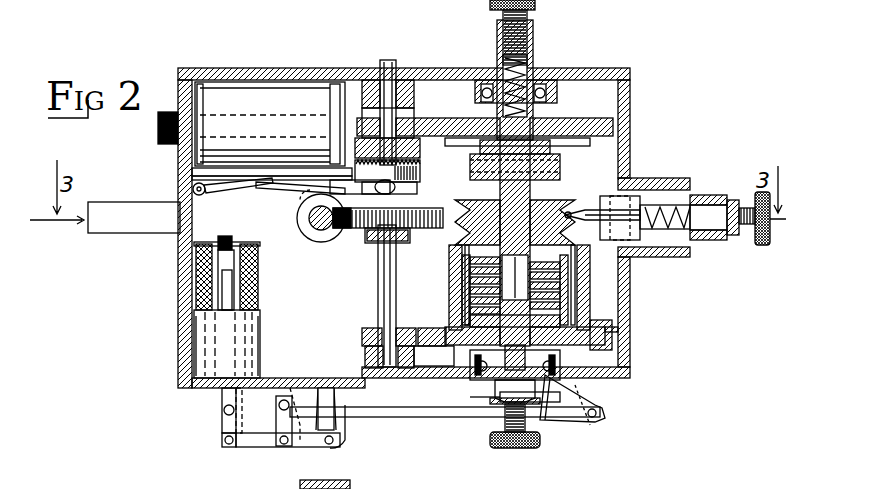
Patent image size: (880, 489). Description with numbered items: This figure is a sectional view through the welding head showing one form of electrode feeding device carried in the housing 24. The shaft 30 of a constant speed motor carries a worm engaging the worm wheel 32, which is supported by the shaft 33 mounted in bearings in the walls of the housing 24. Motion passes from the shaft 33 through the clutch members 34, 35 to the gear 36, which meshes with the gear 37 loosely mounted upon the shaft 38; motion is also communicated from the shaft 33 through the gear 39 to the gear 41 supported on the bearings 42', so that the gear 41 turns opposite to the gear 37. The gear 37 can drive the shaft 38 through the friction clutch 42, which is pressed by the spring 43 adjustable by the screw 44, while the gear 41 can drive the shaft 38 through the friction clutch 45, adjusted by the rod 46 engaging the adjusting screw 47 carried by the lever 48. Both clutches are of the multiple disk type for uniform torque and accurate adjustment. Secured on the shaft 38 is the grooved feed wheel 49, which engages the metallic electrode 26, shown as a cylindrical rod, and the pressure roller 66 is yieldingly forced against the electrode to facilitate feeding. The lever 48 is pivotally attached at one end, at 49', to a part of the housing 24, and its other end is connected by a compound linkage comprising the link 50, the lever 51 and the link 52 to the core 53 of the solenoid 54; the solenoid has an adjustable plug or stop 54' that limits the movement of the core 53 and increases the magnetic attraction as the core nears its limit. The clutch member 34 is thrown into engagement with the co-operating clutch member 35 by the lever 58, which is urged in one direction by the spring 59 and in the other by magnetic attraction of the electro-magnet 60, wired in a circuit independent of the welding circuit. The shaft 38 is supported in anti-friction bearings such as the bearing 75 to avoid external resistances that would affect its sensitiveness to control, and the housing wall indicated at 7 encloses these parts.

The electro-magnet 60 is at (270, 88).
The clutch member 34 is at (312, 80).
The co-operating clutch member 35 is at (356, 160).
The gear 36 is at (383, 118).
The gear 37 is at (426, 118).
The shaft 38 is at (492, 105).
The screw 44 is at (522, 70).
The spring 43 is at (560, 70).
The housing 7 is at (580, 70).
The friction clutch 42 is at (485, 118).
The grooved feed wheel 49 is at (627, 185).
The lever 58 is at (241, 190).
The spring 59 is at (258, 184).
The adjustable plug or stop 54' is at (256, 273).
The worm wheel 32 is at (350, 240).
The shaft 33 is at (378, 290).
The bearings 42' is at (489, 292).
The gear 39 is at (365, 340).
The solenoid 54 is at (194, 310).
The housing 24 is at (185, 350).
The core 53 is at (225, 400).
The link 52 is at (228, 430).
The link 50 is at (282, 425).
The lever 51 is at (273, 445).
The rod 46 is at (520, 410).
The lever 48 is at (455, 415).
The shaft 30 is at (318, 486).
The anti-friction bearing 75 is at (528, 386).
The adjusting screw 47 is at (528, 448).
The pivot 49' is at (609, 400).
The gear 41 is at (610, 352).
The friction clutch 45 is at (590, 297).
The metallic electrode 26 is at (616, 250).
The pressure roller 66 is at (690, 250).